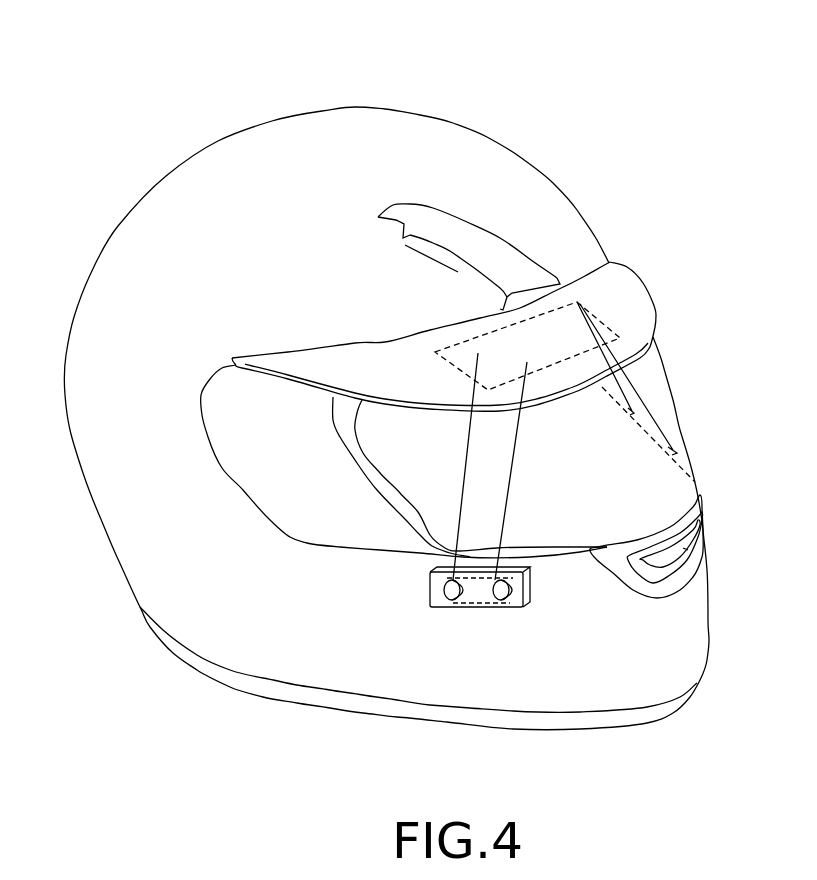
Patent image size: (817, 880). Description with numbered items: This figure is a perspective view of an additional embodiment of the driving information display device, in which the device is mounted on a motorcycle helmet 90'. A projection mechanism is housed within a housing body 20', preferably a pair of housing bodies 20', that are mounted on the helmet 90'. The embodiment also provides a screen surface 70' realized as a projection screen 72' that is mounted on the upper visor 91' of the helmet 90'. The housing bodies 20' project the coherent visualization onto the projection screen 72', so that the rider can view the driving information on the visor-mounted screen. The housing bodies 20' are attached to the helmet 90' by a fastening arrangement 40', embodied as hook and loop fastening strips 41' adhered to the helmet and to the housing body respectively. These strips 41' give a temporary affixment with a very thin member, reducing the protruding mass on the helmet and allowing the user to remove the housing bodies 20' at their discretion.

The helmet 90' is at (386, 378).
The upper visor 91' is at (442, 555).
The screen surface 70' is at (509, 248).
The projection screen 72' is at (525, 260).
The housing body 20' is at (544, 534).
The fastening arrangement 40' is at (561, 695).
The hook and loop fastening strips 41' is at (514, 684).